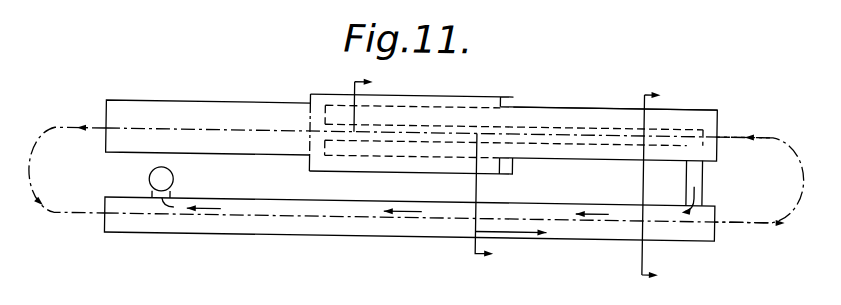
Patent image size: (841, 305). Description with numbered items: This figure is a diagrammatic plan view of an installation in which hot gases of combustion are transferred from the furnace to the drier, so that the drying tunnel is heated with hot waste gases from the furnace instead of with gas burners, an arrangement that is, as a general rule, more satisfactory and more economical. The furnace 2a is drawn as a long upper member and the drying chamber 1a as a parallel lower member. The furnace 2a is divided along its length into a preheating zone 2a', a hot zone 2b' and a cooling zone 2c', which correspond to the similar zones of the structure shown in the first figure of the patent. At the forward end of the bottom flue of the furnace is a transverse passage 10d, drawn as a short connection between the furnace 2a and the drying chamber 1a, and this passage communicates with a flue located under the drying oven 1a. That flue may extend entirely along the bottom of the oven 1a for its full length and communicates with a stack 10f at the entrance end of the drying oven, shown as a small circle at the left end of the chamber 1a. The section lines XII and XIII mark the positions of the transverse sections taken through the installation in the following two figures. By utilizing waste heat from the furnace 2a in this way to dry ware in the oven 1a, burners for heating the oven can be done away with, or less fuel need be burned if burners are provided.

The cooling zone 2c' is at (209, 99).
The hot zone 2b' is at (506, 113).
The preheating zone 2a' is at (615, 82).
The furnace 2a is at (609, 123).
The drying chamber 1a is at (560, 224).
The stack 10f is at (150, 176).
The transverse passage 10d is at (704, 166).
The section line XII is at (408, 86).
The section line XIII is at (705, 95).